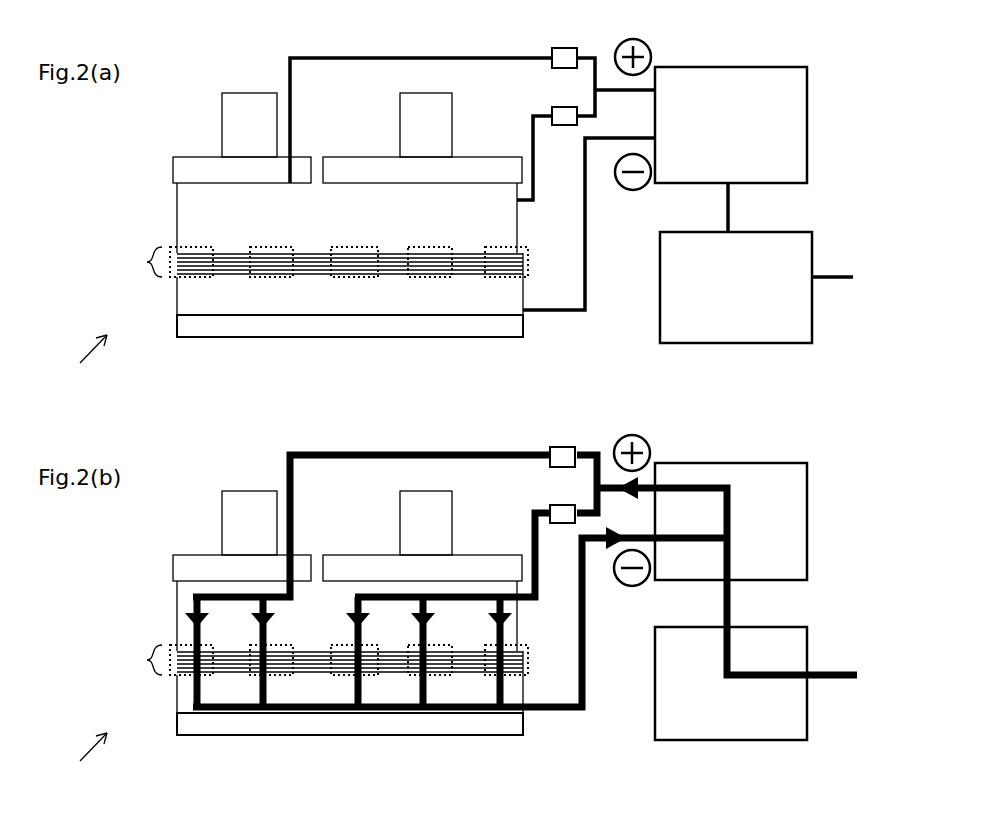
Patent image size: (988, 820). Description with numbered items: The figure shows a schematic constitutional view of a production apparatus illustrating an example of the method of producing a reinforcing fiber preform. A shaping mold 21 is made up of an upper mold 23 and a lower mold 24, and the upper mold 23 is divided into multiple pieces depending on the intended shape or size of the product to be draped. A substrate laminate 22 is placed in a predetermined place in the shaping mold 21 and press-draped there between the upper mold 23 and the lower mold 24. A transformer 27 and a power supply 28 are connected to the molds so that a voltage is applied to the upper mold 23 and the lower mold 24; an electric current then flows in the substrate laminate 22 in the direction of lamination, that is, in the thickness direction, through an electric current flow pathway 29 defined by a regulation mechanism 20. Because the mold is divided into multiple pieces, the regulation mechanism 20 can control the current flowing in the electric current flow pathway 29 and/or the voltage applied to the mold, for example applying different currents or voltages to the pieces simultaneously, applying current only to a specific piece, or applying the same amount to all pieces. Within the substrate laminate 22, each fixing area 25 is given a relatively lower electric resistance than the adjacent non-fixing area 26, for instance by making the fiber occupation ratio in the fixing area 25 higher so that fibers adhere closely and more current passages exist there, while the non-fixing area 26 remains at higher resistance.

In FIG. 2A, the regulation mechanism 20 is at (550, 114).
In FIG. 2B, the regulation mechanism 20 is at (548, 512).
In FIG. 2A, the shaping mold 21 is at (82, 394).
In FIG. 2B, the shaping mold 21 is at (82, 792).
In FIG. 2A, the substrate laminate 22 is at (144, 262).
In FIG. 2B, the substrate laminate 22 is at (144, 660).
In FIG. 2A, the upper mold 23 is at (188, 207).
In FIG. 2B, the upper mold 23 is at (188, 605).
In FIG. 2A, the lower mold 24 is at (188, 300).
In FIG. 2B, the lower mold 24 is at (188, 698).
In FIG. 2A, the fixing area 25 is at (203, 278).
In FIG. 2B, the fixing area 25 is at (200, 672).
In FIG. 2A, the non-fixing area 26 is at (238, 262).
In FIG. 2B, the non-fixing area 26 is at (238, 660).
In FIG. 2A, the transformer 27 is at (753, 103).
In FIG. 2B, the transformer 27 is at (752, 500).
In FIG. 2A, the power supply 28 is at (735, 292).
In FIG. 2B, the power supply 28 is at (735, 690).
In FIG. 2B, the electric current flow pathway 29 is at (288, 476).